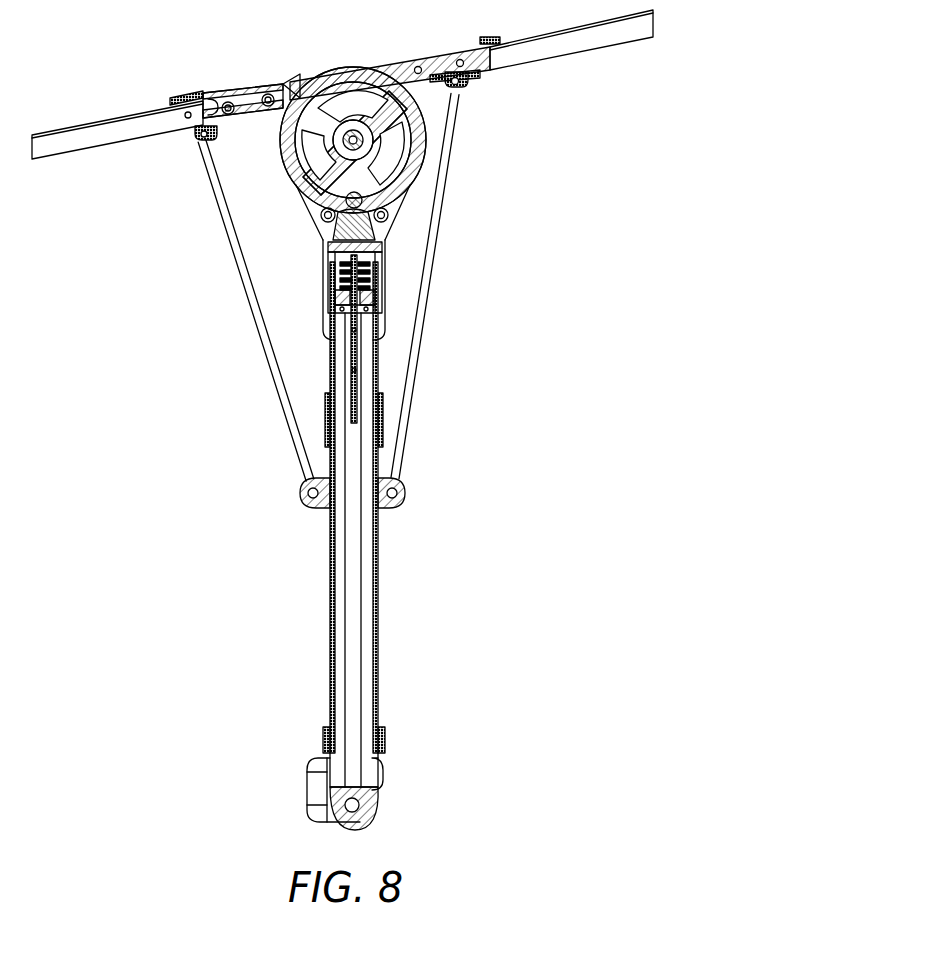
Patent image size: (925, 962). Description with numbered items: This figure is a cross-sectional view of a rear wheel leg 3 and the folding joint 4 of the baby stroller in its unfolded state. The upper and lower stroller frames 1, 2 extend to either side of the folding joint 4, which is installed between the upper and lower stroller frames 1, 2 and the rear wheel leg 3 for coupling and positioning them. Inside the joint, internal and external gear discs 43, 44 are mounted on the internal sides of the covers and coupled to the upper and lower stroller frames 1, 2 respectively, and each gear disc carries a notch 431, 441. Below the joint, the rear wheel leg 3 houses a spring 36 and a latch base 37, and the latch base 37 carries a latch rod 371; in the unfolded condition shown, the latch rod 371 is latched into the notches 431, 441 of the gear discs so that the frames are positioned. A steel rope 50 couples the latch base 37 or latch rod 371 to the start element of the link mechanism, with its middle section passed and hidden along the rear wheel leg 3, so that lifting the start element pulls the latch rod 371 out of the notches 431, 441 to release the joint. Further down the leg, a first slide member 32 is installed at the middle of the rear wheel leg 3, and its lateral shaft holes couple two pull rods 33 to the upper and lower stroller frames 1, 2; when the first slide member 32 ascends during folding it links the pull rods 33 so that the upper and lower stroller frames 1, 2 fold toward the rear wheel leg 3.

The upper stroller frame 1 is at (595, 50).
The lower stroller frame 2 is at (115, 147).
The rear wheel leg 3 is at (375, 612).
The folding joint 4 is at (437, 127).
The first slide member 32 is at (405, 493).
The pull rod 33 is at (407, 398).
The spring 36 is at (370, 281).
The latch base 37 is at (367, 225).
The internal gear disc 43 is at (407, 140).
The external gear disc 44 is at (417, 152).
The steel rope 50 is at (357, 343).
The latch rod 371 is at (465, 209).
The notch 431 is at (465, 209).
The notch 441 is at (362, 198).